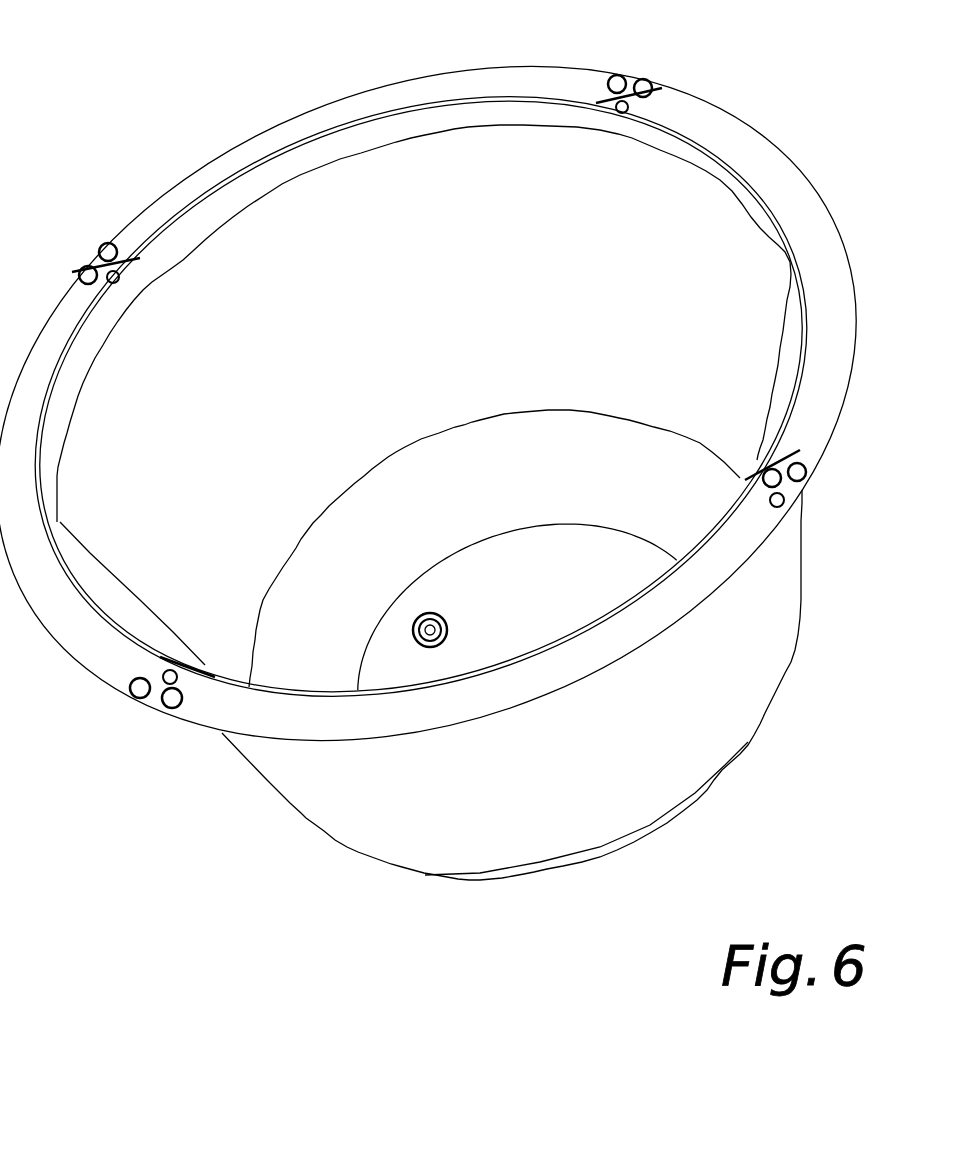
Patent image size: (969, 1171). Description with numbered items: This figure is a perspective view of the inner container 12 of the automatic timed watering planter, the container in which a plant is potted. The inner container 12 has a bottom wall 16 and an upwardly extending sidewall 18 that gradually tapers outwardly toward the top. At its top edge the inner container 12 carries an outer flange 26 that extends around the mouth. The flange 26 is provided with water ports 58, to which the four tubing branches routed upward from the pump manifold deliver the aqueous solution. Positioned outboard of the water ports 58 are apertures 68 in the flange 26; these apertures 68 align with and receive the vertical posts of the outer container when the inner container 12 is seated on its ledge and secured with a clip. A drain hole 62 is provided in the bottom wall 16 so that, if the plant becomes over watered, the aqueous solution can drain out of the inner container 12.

The inner container 12 is at (290, 815).
The outer flange 26 is at (304, 128).
The sidewall 18 is at (625, 243).
The bottom wall 16 is at (505, 625).
The drain hole 62 is at (440, 617).
The water ports 58 is at (606, 104).
The apertures 68 is at (646, 78).